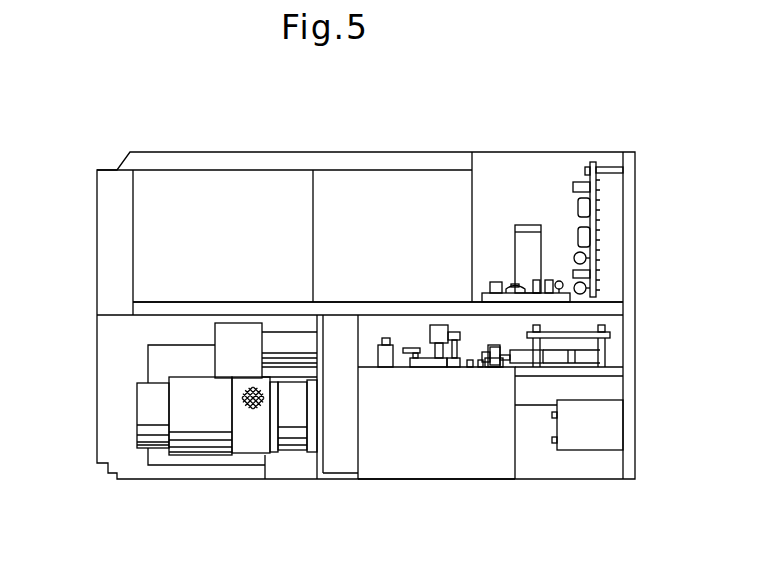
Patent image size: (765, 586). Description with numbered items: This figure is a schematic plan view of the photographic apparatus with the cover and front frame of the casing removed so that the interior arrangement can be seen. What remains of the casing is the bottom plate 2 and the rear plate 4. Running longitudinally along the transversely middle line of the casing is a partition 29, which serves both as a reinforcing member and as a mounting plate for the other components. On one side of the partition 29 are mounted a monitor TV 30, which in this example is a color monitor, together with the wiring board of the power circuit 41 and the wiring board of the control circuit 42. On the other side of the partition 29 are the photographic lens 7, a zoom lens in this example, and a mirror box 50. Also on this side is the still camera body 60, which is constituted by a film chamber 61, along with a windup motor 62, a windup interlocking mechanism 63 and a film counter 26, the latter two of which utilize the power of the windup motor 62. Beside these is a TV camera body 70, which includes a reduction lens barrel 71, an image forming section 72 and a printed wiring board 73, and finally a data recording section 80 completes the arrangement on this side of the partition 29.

The bottom plate 2 is at (137, 468).
The rear plate 4 is at (627, 257).
The photographic lens 7 is at (210, 443).
The film counter 26 is at (598, 438).
The partition 29 is at (394, 307).
The monitor TV 30 is at (176, 183).
The wiring board of power circuit 41 is at (612, 209).
The wiring board of control circuit 42 is at (552, 265).
The mirror box 50 is at (343, 465).
The still camera body 60 is at (499, 485).
The film chamber 61 is at (443, 463).
The windup motor 62 is at (610, 388).
The windup interlocking mechanism 63 is at (592, 321).
The TV camera body 70 is at (207, 322).
The reduction lens barrel 71 is at (283, 340).
The image forming section 72 is at (232, 340).
The printed wiring board 73 is at (160, 365).
The data recording section 80 is at (290, 467).